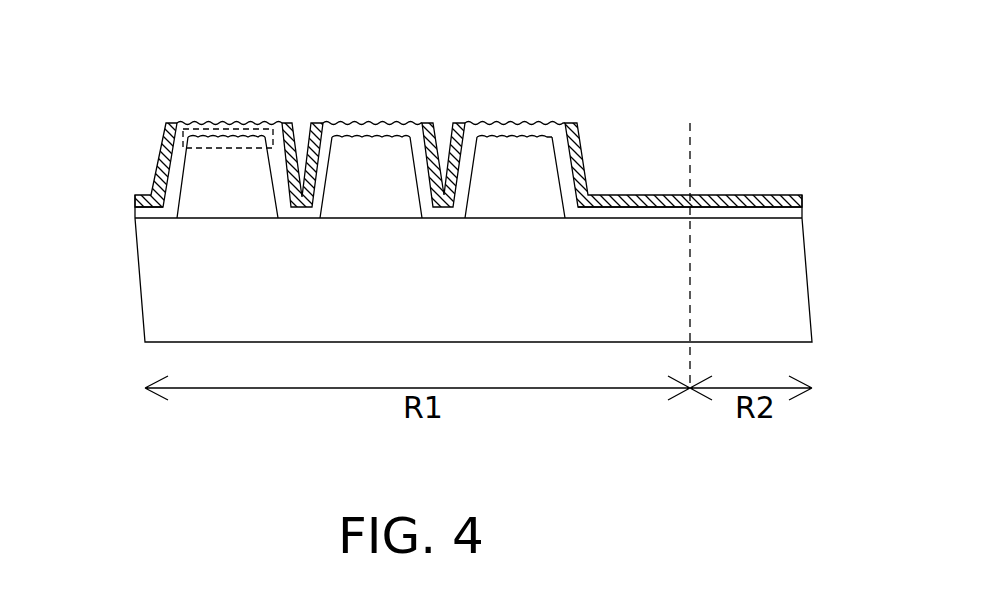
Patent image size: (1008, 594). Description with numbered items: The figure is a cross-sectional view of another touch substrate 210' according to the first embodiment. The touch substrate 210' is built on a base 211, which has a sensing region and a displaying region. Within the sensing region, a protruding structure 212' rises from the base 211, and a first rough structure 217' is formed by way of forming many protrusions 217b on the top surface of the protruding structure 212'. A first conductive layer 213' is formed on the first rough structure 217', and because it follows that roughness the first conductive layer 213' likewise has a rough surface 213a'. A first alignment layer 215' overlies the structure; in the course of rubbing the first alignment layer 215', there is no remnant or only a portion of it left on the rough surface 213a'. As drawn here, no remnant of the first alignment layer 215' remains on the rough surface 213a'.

The touch substrate 210' is at (860, 24).
The base 211 is at (152, 322).
The protruding structure 212' is at (421, 217).
The first conductive layer 213' is at (370, 106).
The rough surface 213a' is at (299, 100).
The first alignment layer 215' is at (421, 165).
The first rough structure 217' is at (167, 133).
The protrusions 217b is at (540, 122).